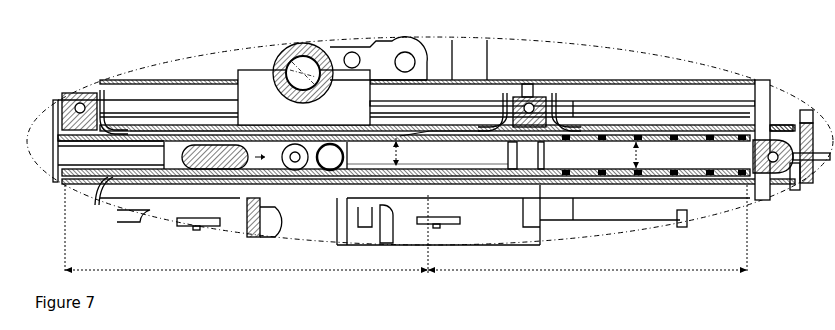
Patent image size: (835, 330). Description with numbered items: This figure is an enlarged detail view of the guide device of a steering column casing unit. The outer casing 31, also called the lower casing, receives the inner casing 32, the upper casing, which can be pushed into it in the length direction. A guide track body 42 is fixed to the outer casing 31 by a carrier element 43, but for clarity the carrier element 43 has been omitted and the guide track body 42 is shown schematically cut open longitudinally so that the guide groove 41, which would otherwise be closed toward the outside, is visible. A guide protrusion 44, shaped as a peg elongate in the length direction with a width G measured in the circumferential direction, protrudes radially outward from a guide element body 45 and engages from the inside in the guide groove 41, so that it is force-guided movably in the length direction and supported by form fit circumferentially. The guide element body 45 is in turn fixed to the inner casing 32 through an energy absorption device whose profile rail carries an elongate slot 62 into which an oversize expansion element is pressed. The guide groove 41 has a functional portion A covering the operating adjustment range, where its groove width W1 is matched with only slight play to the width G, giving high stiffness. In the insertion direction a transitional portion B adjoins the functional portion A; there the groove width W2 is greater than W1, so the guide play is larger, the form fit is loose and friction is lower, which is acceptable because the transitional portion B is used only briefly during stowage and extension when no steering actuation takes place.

The outer casing 31 is at (684, 93).
The inner casing 32 is at (52, 112).
The guide groove 41 is at (443, 160).
The guide track body 42 is at (462, 180).
The carrier element 43 is at (402, 137).
The guide protrusion 44 is at (215, 147).
The guide element body 45 is at (256, 156).
The slot 62 is at (73, 155).
The width of the guide protrusion G is at (195, 133).
The groove width in the functional portion W1 is at (387, 150).
The groove width in the transitional portion W2 is at (630, 142).
The functional portion A is at (246, 229).
The transitional portion B is at (587, 229).